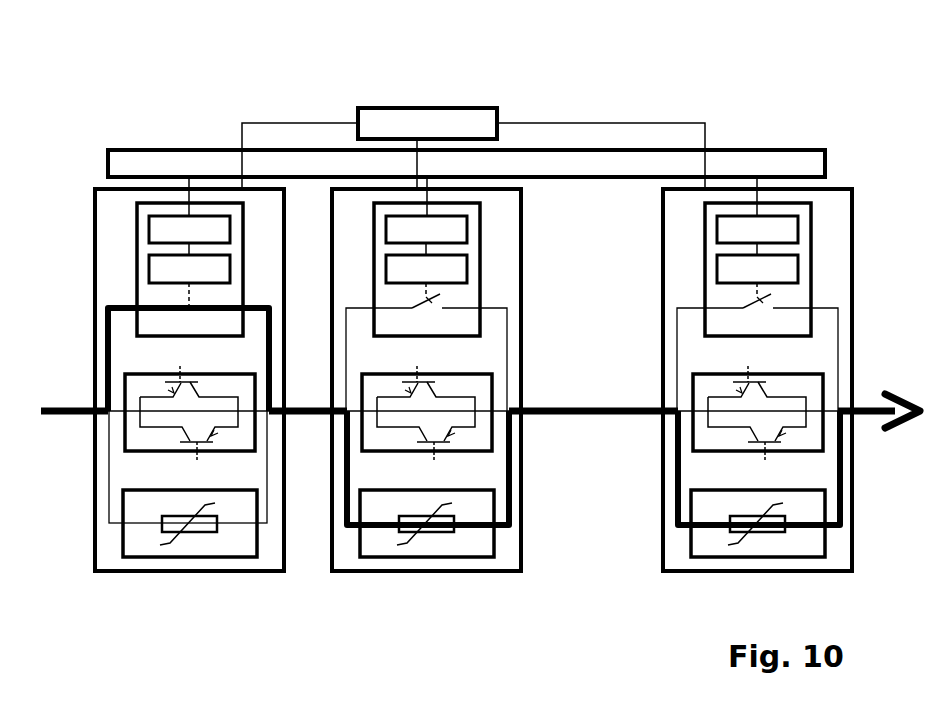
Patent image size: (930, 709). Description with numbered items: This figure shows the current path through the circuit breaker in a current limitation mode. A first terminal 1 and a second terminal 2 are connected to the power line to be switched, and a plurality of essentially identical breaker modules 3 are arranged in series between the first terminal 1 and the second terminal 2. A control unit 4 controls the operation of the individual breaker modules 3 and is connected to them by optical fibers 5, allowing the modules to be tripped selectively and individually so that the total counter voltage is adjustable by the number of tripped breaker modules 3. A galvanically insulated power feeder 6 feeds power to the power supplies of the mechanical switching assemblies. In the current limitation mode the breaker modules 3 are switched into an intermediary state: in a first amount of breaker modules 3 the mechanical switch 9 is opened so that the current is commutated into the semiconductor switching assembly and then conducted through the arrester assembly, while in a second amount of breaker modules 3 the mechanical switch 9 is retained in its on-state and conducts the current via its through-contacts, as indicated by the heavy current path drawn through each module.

The first terminal 1 is at (80, 405).
The second terminal 2 is at (862, 405).
The breaker module 3 is at (222, 573).
The control unit 4 is at (372, 108).
The optical fibers 5 is at (310, 122).
The galvanically insulated power feeder 6 is at (167, 148).
The mechanical switch 9 is at (172, 306).